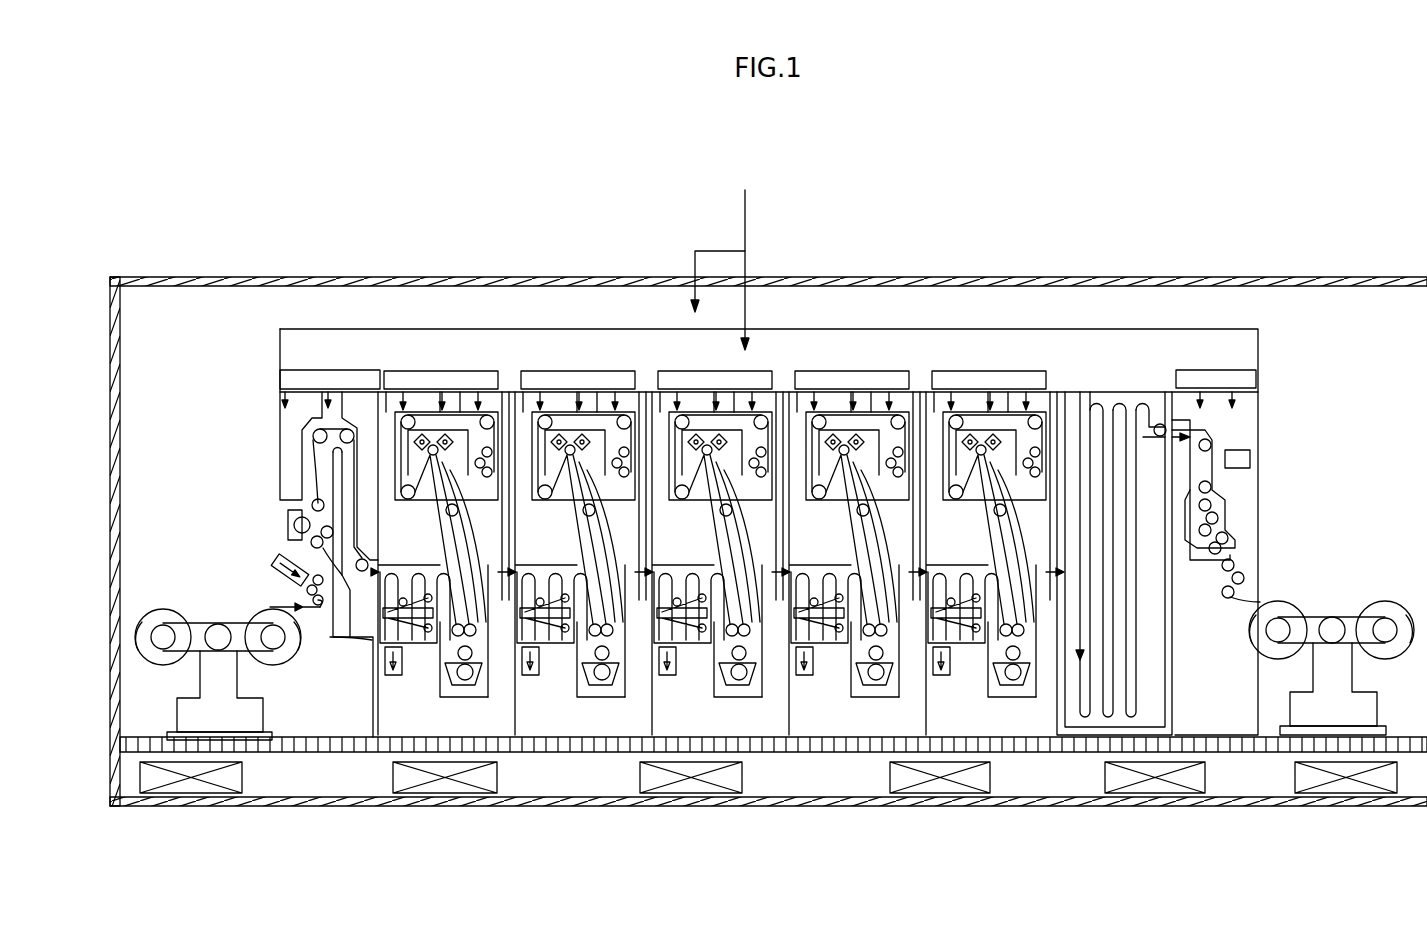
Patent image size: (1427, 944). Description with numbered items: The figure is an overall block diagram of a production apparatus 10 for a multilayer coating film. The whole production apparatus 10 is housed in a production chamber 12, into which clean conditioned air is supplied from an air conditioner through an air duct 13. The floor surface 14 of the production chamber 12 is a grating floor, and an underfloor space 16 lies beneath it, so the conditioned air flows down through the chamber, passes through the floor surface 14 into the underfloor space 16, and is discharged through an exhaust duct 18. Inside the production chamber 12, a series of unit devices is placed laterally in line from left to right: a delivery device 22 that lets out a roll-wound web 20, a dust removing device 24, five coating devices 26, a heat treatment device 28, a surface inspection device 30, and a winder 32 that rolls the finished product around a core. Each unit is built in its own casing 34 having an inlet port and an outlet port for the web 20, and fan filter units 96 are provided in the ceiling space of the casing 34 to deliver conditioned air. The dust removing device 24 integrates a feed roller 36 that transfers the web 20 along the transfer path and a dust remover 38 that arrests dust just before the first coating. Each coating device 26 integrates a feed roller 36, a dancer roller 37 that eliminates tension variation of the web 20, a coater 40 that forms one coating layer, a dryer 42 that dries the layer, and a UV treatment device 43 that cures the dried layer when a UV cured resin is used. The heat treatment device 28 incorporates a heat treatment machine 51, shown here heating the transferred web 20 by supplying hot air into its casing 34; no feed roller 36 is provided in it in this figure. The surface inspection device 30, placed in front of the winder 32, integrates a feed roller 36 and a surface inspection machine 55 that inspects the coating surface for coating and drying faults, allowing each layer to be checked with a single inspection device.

The production apparatus 10 is at (1135, 312).
The production chamber 12 is at (1232, 277).
The air duct 13 is at (745, 226).
The floor surface 14 is at (610, 748).
The underfloor space 16 is at (1030, 775).
The exhaust duct 18 is at (445, 790).
The web 20 is at (333, 640).
The delivery device 22 is at (222, 605).
The dust removing device 24 is at (290, 430).
The coating device 26 is at (558, 352).
The heat treatment device 28 is at (1120, 378).
The surface inspection device 30 is at (1240, 420).
The winder 32 is at (1325, 600).
The casing 34 is at (280, 458).
The feed roller 36 is at (290, 550).
The dancer roller 37 is at (418, 640).
The dust remover 38 is at (288, 515).
The coater 40 is at (465, 700).
The dryer 42 is at (442, 536).
The UV treatment device 43 is at (385, 420).
The heat treatment machine 51 is at (1156, 604).
The surface inspection machine 55 is at (1250, 458).
The fan filter unit 96 is at (320, 378).